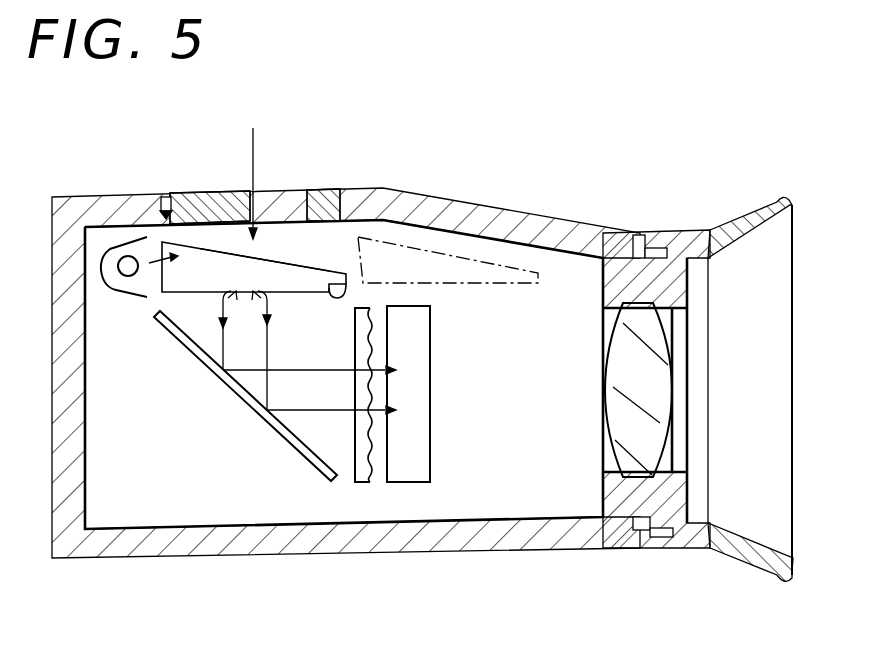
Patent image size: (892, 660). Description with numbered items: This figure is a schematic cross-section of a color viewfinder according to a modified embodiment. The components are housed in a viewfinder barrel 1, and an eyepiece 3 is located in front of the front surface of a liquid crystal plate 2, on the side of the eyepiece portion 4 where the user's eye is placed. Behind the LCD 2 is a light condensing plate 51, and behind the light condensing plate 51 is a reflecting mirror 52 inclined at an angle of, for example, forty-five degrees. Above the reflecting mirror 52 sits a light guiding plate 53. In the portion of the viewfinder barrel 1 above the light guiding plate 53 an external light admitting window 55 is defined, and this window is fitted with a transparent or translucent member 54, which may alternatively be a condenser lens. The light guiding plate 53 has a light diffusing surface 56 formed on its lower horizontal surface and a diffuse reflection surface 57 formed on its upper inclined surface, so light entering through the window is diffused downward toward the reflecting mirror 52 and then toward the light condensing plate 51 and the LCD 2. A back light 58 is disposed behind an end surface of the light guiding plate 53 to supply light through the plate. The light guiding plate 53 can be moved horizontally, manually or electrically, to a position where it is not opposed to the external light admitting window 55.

The viewfinder barrel 1 is at (557, 217).
The liquid crystal plate 2 is at (417, 392).
The eyepiece 3 is at (650, 385).
The eyepiece portion 4 is at (743, 217).
The light condensing plate 51 is at (365, 483).
The reflecting mirror 52 is at (282, 437).
The light guiding plate 53 is at (293, 270).
The transparent member 54 is at (228, 195).
The external light admitting window 55 is at (167, 197).
The light diffusing surface 56 is at (362, 285).
The diffuse reflection surface 57 is at (265, 257).
The back light 58 is at (127, 263).